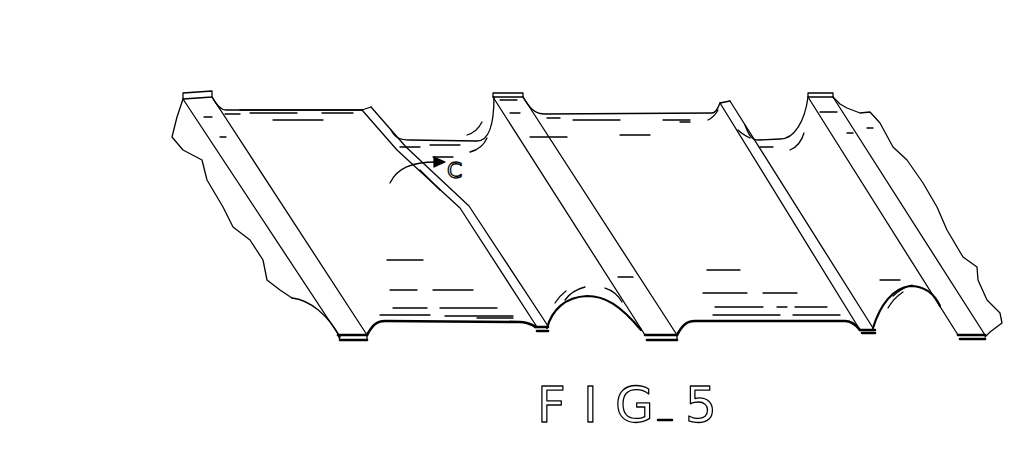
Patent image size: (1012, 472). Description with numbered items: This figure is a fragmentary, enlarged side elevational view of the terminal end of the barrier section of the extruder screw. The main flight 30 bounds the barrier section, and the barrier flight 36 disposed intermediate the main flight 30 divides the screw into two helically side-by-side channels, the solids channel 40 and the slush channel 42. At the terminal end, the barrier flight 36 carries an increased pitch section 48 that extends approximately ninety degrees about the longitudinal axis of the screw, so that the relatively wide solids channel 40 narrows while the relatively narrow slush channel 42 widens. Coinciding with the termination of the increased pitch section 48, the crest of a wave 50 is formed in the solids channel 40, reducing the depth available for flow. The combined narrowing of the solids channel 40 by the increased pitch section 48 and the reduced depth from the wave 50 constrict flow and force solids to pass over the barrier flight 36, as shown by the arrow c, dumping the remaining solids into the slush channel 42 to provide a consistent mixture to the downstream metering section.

The main flight 30 is at (202, 93).
The barrier flight 36 is at (362, 108).
The solids channel 40 is at (268, 109).
The slush channel 42 is at (437, 140).
The increased pitch section 48 is at (432, 178).
The wave 50 is at (300, 109).